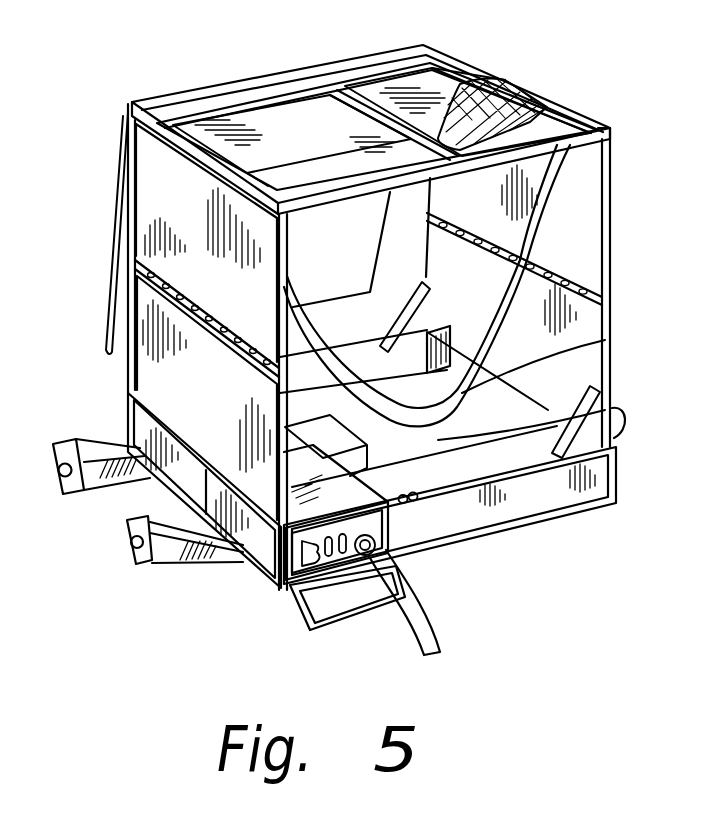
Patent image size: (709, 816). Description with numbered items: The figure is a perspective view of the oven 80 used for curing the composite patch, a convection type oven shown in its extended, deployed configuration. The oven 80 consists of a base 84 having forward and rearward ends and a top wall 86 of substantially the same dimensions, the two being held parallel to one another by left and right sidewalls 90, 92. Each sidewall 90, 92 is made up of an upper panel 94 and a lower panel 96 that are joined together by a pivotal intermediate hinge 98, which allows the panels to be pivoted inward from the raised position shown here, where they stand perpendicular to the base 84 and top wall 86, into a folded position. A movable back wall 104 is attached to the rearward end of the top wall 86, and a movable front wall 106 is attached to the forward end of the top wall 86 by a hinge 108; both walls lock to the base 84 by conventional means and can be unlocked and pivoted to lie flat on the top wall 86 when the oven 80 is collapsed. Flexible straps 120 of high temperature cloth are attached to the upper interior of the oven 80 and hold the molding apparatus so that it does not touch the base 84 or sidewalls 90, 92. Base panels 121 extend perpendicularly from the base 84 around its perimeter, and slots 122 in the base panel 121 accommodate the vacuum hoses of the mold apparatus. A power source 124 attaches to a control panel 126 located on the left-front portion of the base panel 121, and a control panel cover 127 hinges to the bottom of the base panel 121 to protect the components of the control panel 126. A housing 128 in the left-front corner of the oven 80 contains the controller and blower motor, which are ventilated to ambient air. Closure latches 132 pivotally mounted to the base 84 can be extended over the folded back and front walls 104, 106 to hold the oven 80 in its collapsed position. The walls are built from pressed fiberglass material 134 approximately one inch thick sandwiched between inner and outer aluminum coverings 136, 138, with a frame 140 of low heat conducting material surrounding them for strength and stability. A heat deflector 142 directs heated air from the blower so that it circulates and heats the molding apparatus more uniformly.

The oven 80 is at (148, 50).
The base 84 is at (595, 502).
The top wall 86 is at (426, 50).
The left sidewall 90 is at (620, 237).
The right sidewall 92 is at (184, 342).
The upper panel 94 is at (170, 198).
The lower panel 96 is at (172, 384).
The pivotal intermediate hinge 98 is at (130, 268).
The movable back wall 104 is at (115, 328).
The movable front wall 106 is at (450, 87).
The hinge 108 is at (613, 148).
The flexible straps 120 is at (457, 403).
The base panels 121 is at (588, 482).
The slots 122 is at (413, 503).
The power source 124 is at (436, 627).
The control panel 126 is at (303, 570).
The control panel cover 127 is at (333, 608).
The housing 128 is at (300, 510).
The closure latches 132 is at (152, 564).
The fiberglass material 134 is at (513, 110).
The inner aluminum covering 136 is at (562, 120).
The outer aluminum covering 138 is at (274, 118).
The frame 140 is at (250, 173).
The heat deflector 142 is at (562, 350).